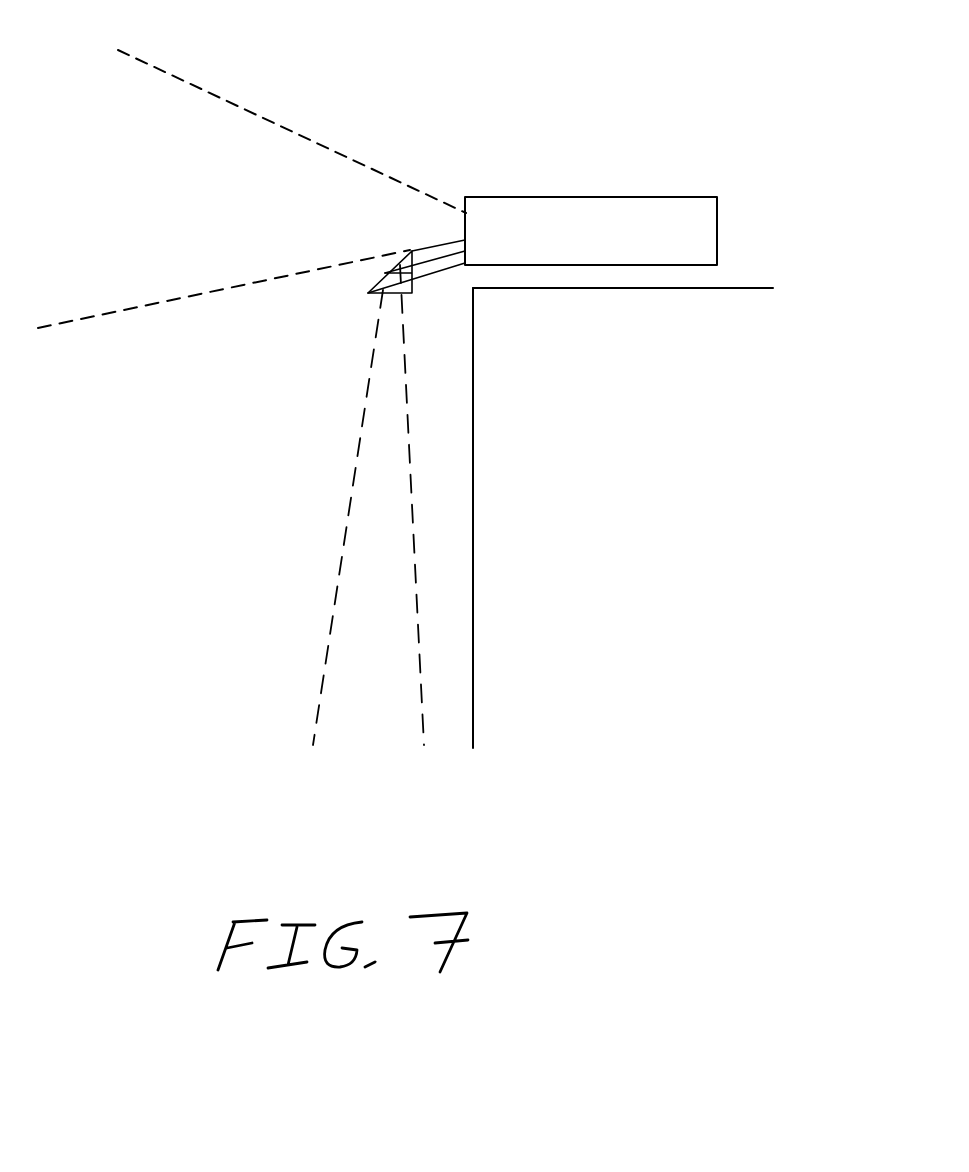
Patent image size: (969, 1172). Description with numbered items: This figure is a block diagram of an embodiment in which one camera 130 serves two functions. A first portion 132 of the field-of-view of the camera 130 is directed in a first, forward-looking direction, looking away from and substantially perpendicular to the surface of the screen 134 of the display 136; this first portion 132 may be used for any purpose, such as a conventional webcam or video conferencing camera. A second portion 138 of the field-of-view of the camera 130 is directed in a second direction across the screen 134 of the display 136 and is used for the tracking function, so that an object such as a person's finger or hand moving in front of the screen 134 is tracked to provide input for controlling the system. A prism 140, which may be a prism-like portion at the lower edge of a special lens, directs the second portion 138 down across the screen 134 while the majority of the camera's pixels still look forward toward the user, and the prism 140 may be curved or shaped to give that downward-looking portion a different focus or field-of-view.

The camera 130 is at (606, 186).
The first portion of the field-of-view 132 is at (252, 212).
The screen 134 is at (325, 518).
The display 136 is at (680, 235).
The second portion of the field-of-view 138 is at (401, 505).
The prism 140 is at (363, 314).